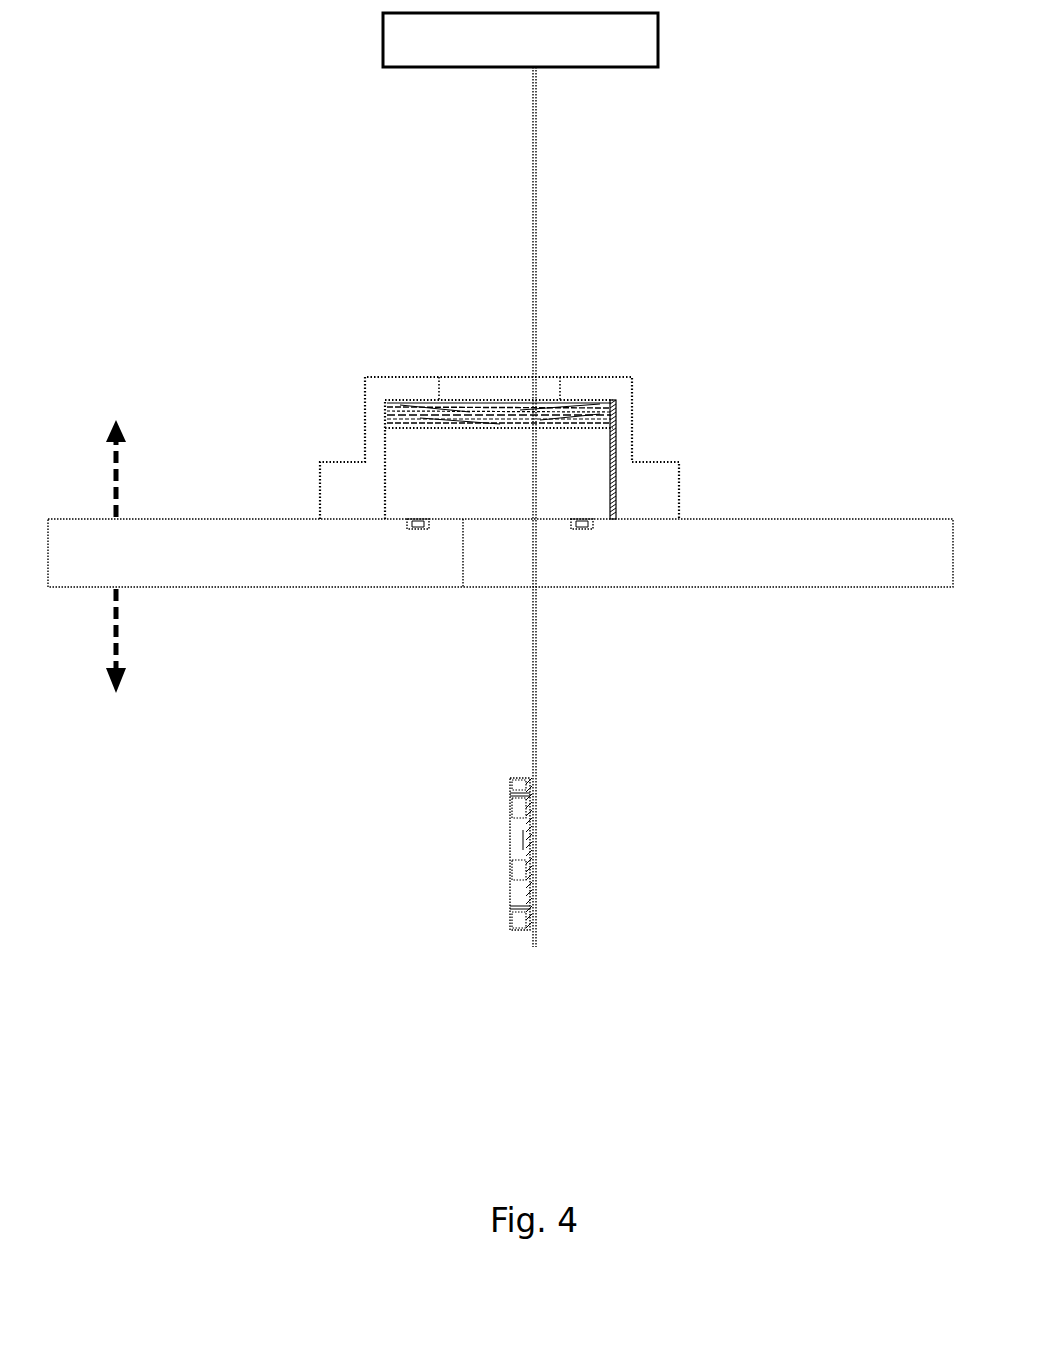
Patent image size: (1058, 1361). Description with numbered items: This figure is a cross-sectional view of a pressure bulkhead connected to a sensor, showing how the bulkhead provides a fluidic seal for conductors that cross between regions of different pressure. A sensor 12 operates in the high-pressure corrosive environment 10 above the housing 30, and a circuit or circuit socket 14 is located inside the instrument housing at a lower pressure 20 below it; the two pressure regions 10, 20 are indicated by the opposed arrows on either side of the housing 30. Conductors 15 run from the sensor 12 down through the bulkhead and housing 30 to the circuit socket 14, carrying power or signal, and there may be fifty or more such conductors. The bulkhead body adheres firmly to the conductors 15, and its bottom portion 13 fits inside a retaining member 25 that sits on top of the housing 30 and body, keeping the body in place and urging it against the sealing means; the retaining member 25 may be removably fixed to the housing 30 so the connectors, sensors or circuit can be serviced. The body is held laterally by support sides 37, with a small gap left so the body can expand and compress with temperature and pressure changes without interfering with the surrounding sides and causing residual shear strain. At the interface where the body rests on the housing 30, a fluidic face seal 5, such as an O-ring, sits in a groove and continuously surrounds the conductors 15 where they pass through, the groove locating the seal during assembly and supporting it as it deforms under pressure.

The sensor 12 is at (503, 55).
The conductor 15 is at (535, 185).
The retaining member 25 is at (403, 375).
The support side 37 is at (612, 490).
The housing 30 is at (921, 571).
The bottom portion of the body 13 is at (497, 560).
The fluidic face seal 5 is at (578, 532).
The circuit socket 14 is at (510, 868).
The high-pressure region 10 is at (99, 493).
The low-pressure region 20 is at (100, 662).